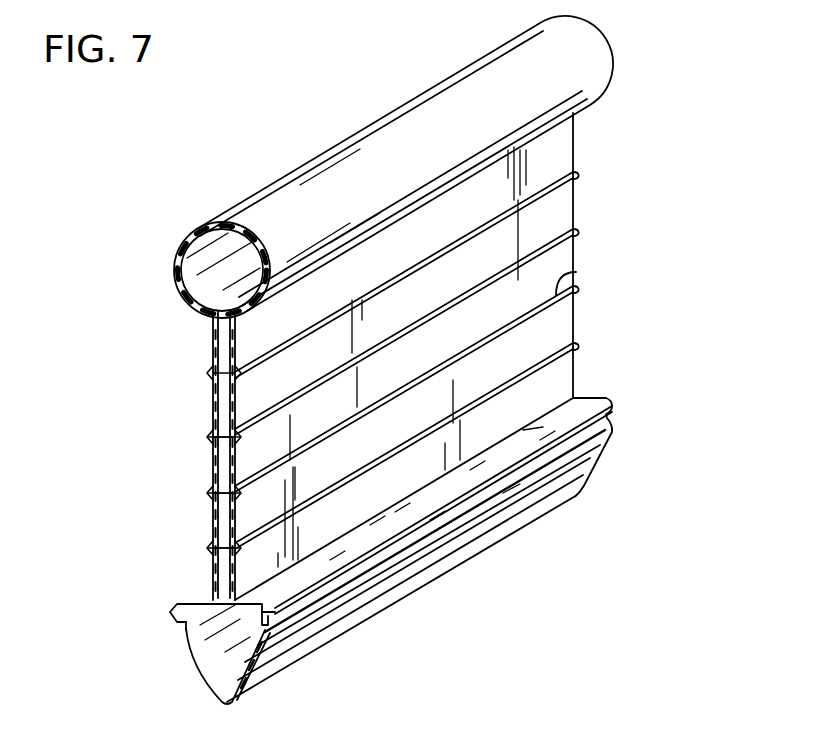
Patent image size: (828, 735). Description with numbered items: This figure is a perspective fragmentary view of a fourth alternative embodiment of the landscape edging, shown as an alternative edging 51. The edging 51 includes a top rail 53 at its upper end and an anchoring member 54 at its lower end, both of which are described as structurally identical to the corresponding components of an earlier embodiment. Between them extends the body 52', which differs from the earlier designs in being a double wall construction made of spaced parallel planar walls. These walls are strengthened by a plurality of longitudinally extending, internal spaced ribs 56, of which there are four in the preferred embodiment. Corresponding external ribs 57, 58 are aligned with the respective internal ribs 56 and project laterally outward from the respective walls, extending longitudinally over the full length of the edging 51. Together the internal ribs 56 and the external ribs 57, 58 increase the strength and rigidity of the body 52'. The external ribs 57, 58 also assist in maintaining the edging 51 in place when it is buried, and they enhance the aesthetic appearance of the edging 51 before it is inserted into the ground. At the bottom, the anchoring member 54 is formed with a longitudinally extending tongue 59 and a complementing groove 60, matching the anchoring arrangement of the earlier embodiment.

The edging 51 is at (195, 178).
The body 52' is at (492, 340).
The top rail 53 is at (453, 70).
The anchoring member 54 is at (565, 327).
The internal ribs 56 is at (215, 437).
The external ribs 57 is at (218, 493).
The external ribs 58 is at (563, 238).
The tongue 59 is at (170, 612).
The groove 60 is at (270, 617).